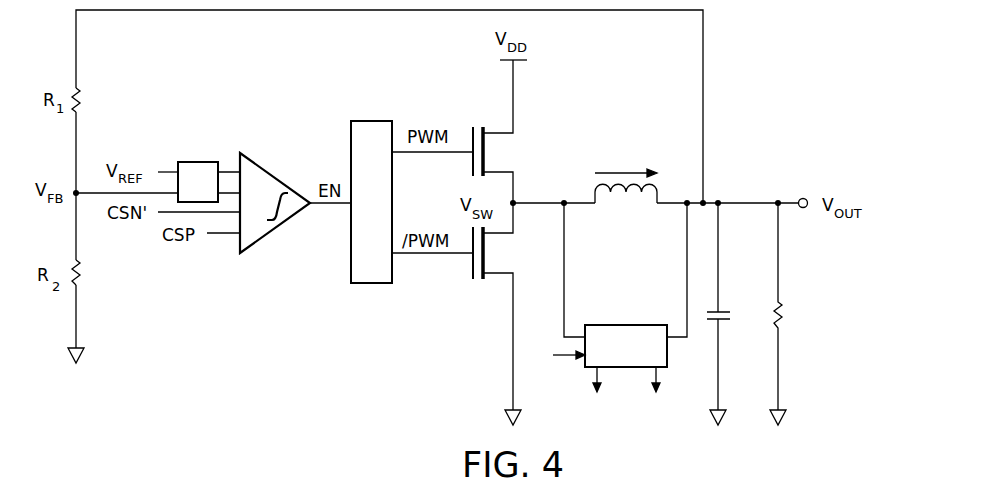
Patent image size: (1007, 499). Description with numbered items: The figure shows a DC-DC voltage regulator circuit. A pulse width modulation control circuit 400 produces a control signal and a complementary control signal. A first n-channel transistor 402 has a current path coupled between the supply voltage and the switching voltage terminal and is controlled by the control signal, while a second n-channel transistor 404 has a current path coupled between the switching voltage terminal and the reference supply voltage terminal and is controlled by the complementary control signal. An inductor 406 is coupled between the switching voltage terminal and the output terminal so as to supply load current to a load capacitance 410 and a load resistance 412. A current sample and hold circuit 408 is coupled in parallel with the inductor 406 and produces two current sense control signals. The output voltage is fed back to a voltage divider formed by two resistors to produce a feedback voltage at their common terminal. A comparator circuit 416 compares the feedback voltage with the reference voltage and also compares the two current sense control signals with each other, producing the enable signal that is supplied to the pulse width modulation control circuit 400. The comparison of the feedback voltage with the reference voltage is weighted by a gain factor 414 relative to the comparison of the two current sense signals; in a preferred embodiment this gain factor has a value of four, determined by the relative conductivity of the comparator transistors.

The pulse width modulation (PWM) control circuit 400 is at (369, 285).
The n-channel transistor 402 is at (462, 138).
The n-channel transistor 404 is at (462, 268).
The inductor 406 is at (607, 207).
The current sample and hold circuit 408 is at (625, 325).
The load capacitance 410 is at (730, 316).
The load resistance 412 is at (782, 318).
The gain factor α 414 is at (197, 162).
The comparator circuit 416 is at (276, 230).